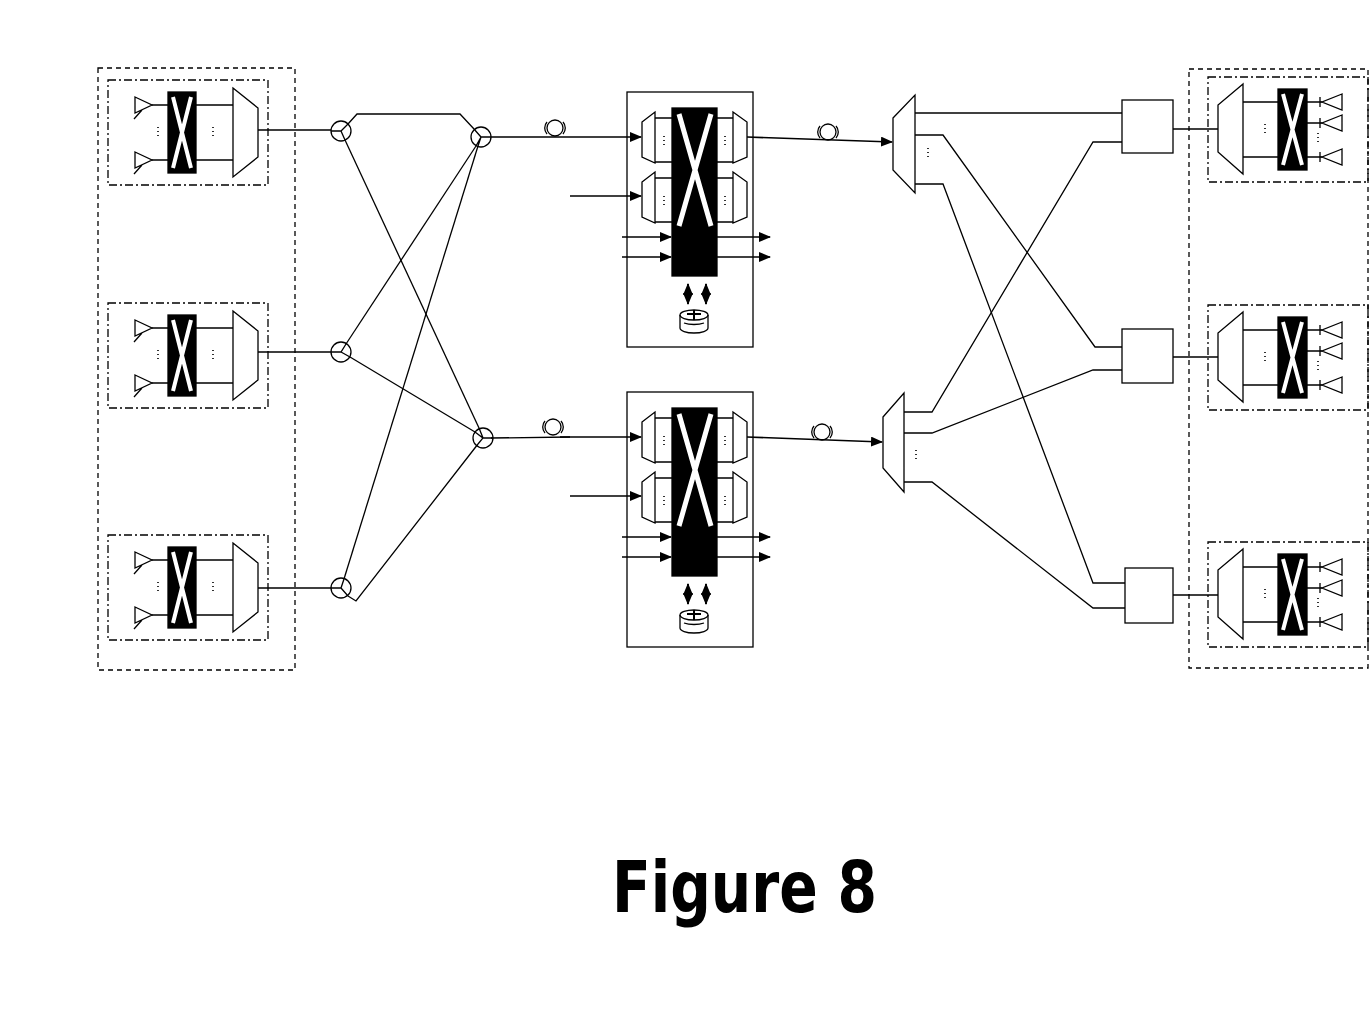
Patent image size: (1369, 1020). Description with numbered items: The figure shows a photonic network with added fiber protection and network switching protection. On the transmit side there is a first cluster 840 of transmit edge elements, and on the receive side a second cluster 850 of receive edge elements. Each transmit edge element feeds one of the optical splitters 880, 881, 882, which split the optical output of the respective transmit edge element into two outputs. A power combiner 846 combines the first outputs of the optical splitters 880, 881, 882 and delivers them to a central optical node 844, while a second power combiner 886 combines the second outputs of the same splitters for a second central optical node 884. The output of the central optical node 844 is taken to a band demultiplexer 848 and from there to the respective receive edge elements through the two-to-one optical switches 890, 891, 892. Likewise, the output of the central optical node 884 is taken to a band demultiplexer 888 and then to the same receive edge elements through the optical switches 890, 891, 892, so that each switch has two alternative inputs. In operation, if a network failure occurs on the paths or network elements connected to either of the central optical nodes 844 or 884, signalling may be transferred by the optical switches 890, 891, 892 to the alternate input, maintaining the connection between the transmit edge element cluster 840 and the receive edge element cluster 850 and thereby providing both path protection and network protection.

The first cluster of transmit edge elements 840 is at (200, 70).
The second cluster of receive edge elements 850 is at (1312, 69).
The optical splitter 880 is at (341, 121).
The optical splitter 881 is at (341, 342).
The optical splitter 882 is at (343, 598).
The power combiner 846 is at (481, 127).
The power combiner 886 is at (482, 428).
The central optical node 844 is at (707, 92).
The central optical node 884 is at (707, 392).
The band demultiplexer 848 is at (905, 110).
The band demultiplexer 888 is at (897, 410).
The 2:1 optical switch 890 is at (1158, 100).
The 2:1 optical switch 891 is at (1158, 329).
The 2:1 optical switch 892 is at (1158, 568).